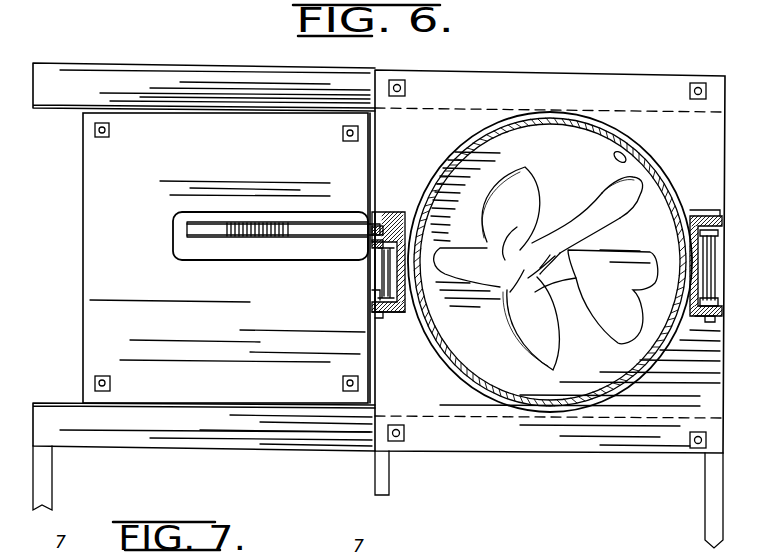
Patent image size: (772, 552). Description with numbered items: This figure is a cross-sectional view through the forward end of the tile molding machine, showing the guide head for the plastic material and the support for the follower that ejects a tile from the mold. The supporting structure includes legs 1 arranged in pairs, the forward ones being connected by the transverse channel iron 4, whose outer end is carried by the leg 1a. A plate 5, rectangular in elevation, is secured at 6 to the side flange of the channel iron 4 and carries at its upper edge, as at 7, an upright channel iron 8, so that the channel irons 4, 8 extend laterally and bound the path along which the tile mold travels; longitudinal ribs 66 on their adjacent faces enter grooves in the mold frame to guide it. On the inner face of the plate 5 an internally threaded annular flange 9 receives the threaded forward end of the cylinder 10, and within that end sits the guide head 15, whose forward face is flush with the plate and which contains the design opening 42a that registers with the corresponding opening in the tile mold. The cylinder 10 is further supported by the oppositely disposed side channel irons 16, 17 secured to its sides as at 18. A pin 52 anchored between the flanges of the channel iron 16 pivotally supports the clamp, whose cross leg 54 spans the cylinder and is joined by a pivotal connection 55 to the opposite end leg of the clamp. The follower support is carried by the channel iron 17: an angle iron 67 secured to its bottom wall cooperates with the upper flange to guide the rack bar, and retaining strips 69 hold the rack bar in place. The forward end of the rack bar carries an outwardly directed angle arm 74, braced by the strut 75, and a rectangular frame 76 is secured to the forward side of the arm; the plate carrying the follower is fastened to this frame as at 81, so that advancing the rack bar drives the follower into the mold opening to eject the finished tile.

The legs 1 is at (389, 487).
The leg 1a is at (52, 492).
The transverse channel iron 4 is at (343, 448).
The plate 5 is at (580, 76).
The securing means 6 is at (400, 442).
The securing means 7 is at (405, 82).
The upright channel iron 8 is at (255, 68).
The internally threaded annular flange 9 is at (448, 152).
The cylinder 10 is at (628, 153).
The guide head 15 is at (546, 266).
The side channel iron 16 is at (708, 218).
The side channel iron 17 is at (400, 314).
The securing means 18 is at (716, 270).
The opening 42a is at (490, 288).
The pin 52 is at (720, 262).
The cross leg 54 is at (720, 304).
The pivotal connection 55 is at (382, 285).
The longitudinal ribs 66 is at (48, 110).
The angle iron 67 is at (392, 210).
The retaining strips 69 is at (374, 228).
The angle arm 74 is at (216, 253).
The strut 75 is at (310, 225).
The rectangular frame 76 is at (83, 310).
The securing means 81 is at (94, 132).